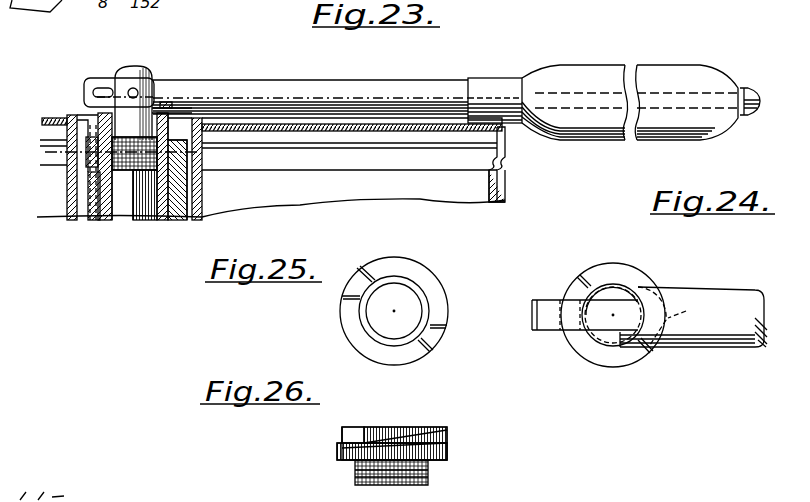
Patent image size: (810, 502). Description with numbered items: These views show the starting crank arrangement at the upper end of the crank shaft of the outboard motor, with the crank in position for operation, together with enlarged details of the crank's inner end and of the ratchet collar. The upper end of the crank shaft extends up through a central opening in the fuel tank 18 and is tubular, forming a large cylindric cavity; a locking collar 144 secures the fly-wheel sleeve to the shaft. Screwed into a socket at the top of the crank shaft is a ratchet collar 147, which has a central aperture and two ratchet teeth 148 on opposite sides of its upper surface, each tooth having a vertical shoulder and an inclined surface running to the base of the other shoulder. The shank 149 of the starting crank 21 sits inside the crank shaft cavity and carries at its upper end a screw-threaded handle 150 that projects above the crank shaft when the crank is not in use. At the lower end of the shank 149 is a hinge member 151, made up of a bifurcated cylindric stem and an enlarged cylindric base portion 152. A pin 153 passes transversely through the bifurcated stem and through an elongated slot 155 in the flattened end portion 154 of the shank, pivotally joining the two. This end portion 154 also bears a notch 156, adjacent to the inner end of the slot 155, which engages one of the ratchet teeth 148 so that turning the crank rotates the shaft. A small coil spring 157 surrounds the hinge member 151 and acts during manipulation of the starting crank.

In FIG. 23, the fuel tank 18 is at (514, 185).
In FIG. 23, the starting crank 21 is at (439, 76).
In FIG. 23, the locking collar 144 is at (202, 157).
In FIG. 23, the ratchet collar 147 is at (193, 110).
In FIG. 24, the ratchet collar 147 is at (620, 272).
In FIG. 25, the ratchet collar 147 is at (341, 340).
In FIG. 26, the ratchet collar 147 is at (337, 458).
In FIG. 25, the ratchet teeth 148 is at (341, 299).
In FIG. 26, the ratchet teeth 148 is at (352, 437).
In FIG. 23, the shank 149 is at (333, 86).
In FIG. 24, the shank 149 is at (716, 292).
In FIG. 23, the handle 150 is at (655, 83).
In FIG. 23, the hinge member 151 is at (123, 110).
In FIG. 23, the base portion 152 is at (132, 168).
In FIG. 23, the pin 153 is at (138, 91).
In FIG. 23, the end portion 154 is at (88, 78).
In FIG. 24, the end portion 154 is at (550, 304).
In FIG. 23, the slot 155 is at (110, 89).
In FIG. 23, the notch 156 is at (170, 105).
In FIG. 24, the notch 156 is at (700, 310).
In FIG. 23, the coil spring 157 is at (83, 157).